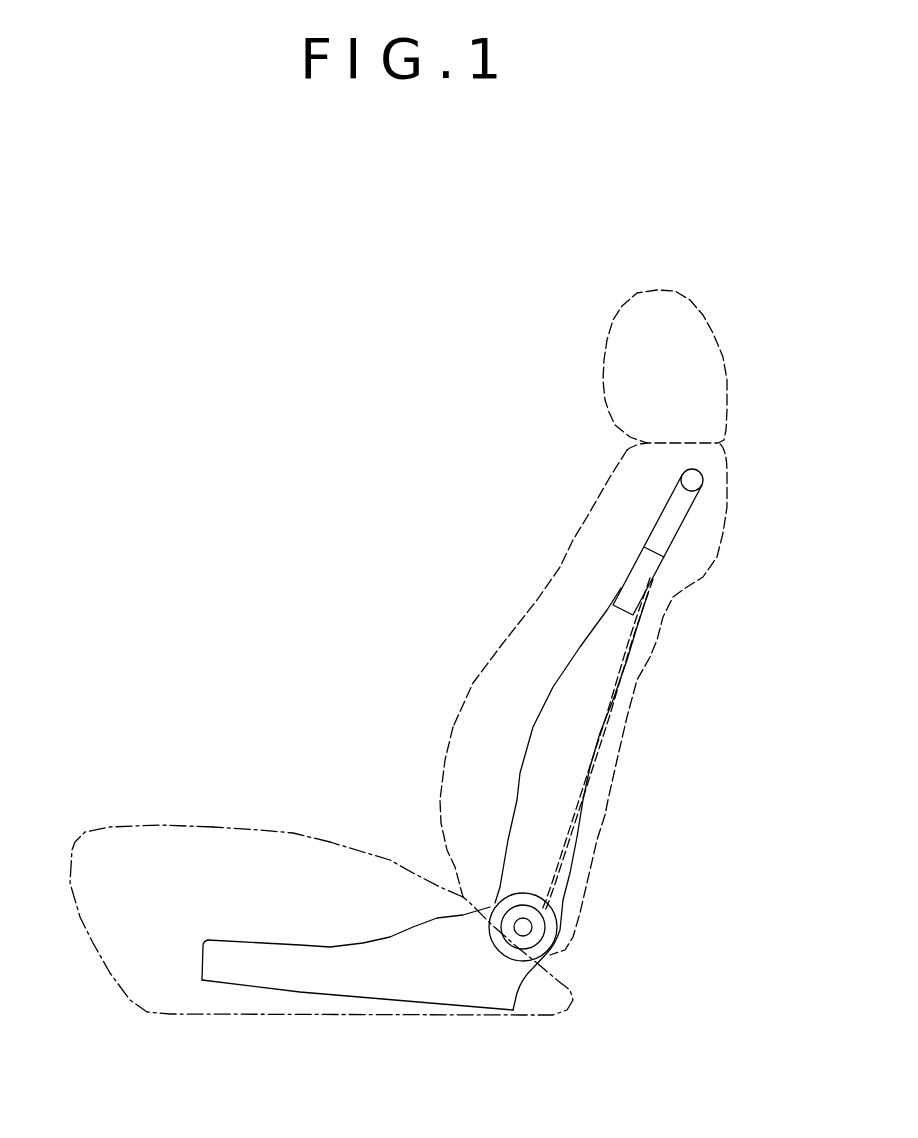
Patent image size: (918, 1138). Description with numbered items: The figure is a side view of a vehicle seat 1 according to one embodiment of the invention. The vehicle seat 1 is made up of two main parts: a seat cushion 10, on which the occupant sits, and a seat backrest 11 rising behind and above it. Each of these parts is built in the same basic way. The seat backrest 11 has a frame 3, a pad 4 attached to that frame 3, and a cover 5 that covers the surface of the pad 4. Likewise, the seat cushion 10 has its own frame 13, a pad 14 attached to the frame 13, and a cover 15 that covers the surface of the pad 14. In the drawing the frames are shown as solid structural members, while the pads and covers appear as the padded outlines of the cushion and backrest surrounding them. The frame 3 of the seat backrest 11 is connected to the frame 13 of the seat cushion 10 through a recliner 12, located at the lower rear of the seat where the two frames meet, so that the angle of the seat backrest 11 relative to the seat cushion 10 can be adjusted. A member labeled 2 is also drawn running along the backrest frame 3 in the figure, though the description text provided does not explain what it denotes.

The vehicle seat 1 is at (395, 523).
The strap / tension member 2 is at (637, 645).
The frame 3 is at (587, 648).
The pad 4 is at (520, 657).
The cover 5 is at (463, 705).
The seat cushion 10 is at (170, 825).
The seat backrest 11 is at (573, 543).
The recliner 12 is at (530, 937).
The frame 13 is at (223, 953).
The pad 14 is at (287, 863).
The cover 15 is at (368, 850).